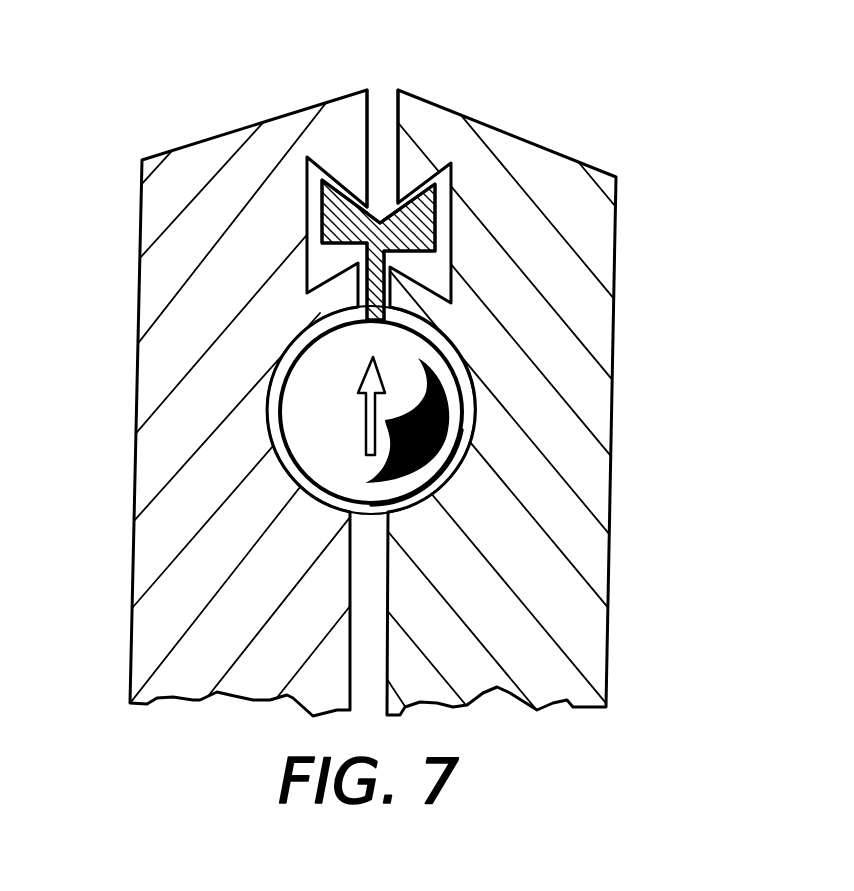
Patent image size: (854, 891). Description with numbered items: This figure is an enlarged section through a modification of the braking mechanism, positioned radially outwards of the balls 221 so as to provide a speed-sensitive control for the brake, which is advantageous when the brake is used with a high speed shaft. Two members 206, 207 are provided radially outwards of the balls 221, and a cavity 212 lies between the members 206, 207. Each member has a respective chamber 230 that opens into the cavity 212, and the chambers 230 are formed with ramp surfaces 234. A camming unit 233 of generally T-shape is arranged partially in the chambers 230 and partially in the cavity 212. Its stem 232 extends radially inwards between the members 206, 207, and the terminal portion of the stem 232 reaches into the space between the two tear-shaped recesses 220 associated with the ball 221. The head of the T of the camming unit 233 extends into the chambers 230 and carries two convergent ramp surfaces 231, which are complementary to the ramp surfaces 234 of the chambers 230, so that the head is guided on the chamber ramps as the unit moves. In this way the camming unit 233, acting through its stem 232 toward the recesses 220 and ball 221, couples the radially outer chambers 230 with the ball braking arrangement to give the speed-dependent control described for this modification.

The member 206 is at (527, 583).
The member 207 is at (188, 602).
The cavity 212 is at (383, 108).
The tear-shaped recess 220 is at (295, 350).
The ball 221 is at (460, 418).
The chamber 230 is at (312, 213).
The convergent ramp surface 231 is at (342, 178).
The stem 232 is at (387, 258).
The camming unit 233 is at (398, 212).
The ramp surface 234 is at (419, 188).